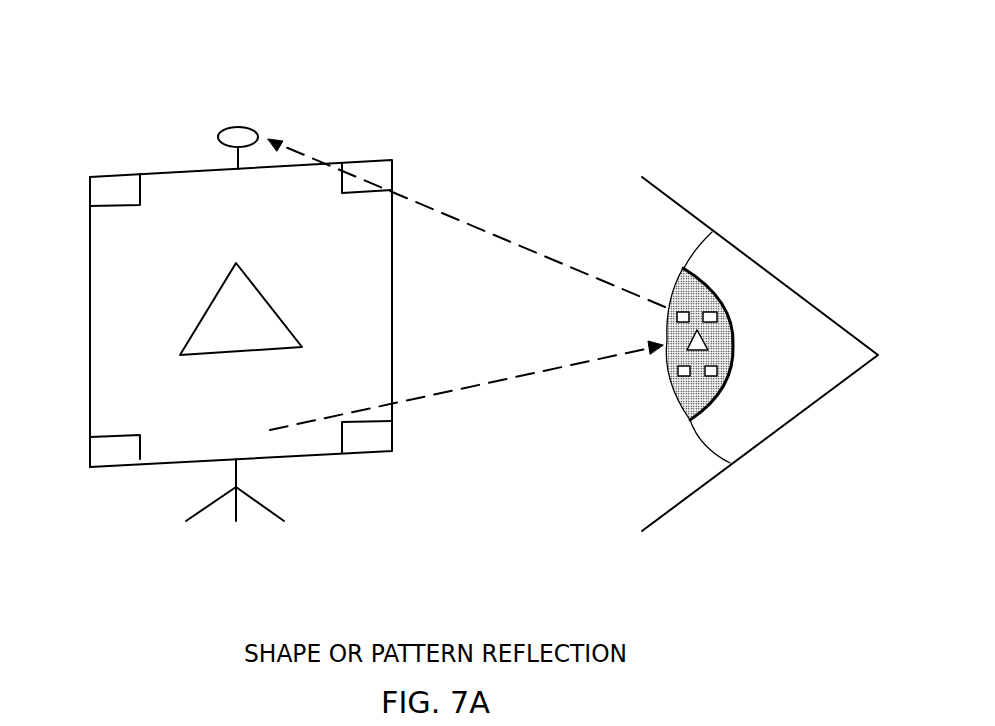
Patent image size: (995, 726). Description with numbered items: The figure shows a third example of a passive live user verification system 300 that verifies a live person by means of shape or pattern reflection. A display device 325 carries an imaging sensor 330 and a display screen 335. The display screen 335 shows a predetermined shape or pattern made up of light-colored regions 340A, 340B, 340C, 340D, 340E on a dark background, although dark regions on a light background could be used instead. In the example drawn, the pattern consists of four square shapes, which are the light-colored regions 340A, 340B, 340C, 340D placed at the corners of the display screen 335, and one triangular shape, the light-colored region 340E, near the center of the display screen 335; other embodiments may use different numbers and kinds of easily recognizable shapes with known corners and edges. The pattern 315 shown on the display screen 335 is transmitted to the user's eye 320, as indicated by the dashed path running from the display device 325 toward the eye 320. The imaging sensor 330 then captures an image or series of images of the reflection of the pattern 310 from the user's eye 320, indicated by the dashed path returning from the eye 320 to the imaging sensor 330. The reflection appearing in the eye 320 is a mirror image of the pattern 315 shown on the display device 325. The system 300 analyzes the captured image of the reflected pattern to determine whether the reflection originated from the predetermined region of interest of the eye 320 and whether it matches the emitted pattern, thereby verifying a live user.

The passive live user verification system 300 is at (703, 62).
The reflection of the pattern 310 is at (488, 230).
The pattern 315 is at (482, 383).
The user's eye 320 is at (690, 398).
The display device 325 is at (90, 322).
The imaging sensor 330 is at (242, 127).
The display screen 335 is at (102, 258).
The light-colored region 340A is at (108, 188).
The light-colored region 340B is at (375, 170).
The light-colored region 340C is at (370, 443).
The light-colored region 340D is at (115, 458).
The light-colored region 340E is at (262, 292).